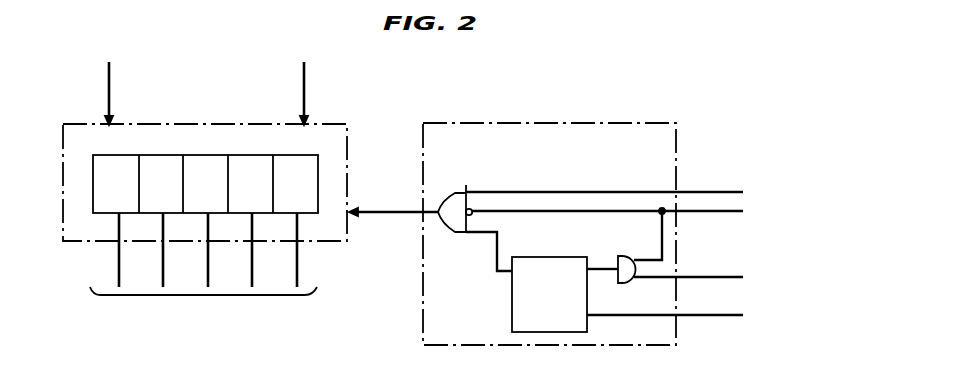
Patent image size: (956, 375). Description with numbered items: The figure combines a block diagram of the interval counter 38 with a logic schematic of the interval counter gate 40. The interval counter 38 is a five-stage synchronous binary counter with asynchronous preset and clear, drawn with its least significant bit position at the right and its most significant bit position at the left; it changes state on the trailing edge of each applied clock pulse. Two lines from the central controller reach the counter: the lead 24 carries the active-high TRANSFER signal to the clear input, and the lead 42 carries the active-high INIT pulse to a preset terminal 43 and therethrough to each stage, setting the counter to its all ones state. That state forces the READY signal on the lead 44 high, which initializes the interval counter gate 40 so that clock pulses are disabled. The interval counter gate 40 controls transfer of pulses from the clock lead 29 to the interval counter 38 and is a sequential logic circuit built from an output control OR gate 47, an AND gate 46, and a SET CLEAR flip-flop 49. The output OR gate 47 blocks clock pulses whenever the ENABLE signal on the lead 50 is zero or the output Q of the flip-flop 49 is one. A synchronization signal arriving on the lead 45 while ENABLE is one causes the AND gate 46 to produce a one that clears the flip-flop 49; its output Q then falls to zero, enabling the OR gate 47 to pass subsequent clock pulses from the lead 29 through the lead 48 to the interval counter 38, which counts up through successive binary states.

The interval counter 38 is at (216, 118).
The lead 42 is at (109, 88).
The preset terminal 43 is at (109, 123).
The lead 24 is at (304, 85).
The interval counter gate 40 is at (541, 123).
The output control OR gate 47 is at (446, 221).
The lead 48 is at (399, 213).
The clock lead 29 is at (735, 194).
The lead 50 is at (735, 208).
The AND gate 46 is at (627, 257).
The lead 45 is at (735, 278).
The lead 44 is at (735, 314).
The SET CLEAR flip-flop 49 is at (512, 316).